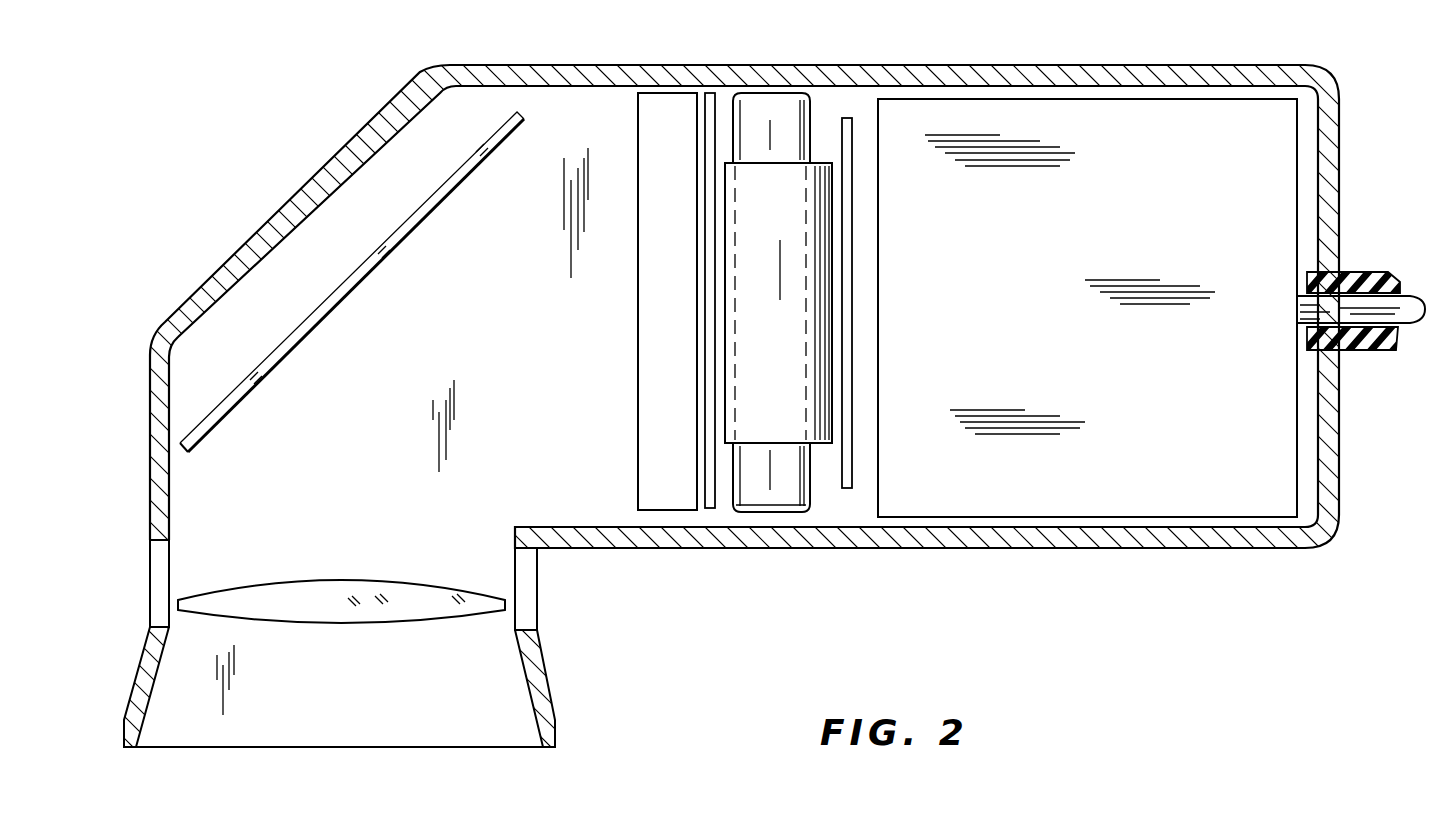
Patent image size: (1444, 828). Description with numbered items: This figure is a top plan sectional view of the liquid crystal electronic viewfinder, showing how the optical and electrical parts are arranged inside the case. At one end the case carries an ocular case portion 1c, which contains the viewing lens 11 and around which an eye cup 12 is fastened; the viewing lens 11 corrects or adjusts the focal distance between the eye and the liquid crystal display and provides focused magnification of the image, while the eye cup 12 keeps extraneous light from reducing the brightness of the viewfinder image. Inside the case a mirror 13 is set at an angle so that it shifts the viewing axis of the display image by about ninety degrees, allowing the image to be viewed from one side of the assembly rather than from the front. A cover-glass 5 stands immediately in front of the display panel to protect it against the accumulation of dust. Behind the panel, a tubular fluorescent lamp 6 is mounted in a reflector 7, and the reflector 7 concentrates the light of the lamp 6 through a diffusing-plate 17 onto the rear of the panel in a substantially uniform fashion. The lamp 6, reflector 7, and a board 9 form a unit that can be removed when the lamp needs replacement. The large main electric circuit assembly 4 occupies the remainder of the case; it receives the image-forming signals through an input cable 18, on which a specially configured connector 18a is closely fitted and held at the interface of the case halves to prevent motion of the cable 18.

The ocular case portion 1c is at (524, 577).
The main electric circuit assembly 4 is at (1143, 488).
The cover-glass 5 is at (663, 110).
The tubular fluorescent lamp 6 is at (800, 515).
The reflector 7 is at (790, 427).
The board 9 is at (853, 253).
The viewing lens 11 is at (340, 615).
The eye cup 12 is at (535, 656).
The mirror 13 is at (318, 304).
The diffusing-plate 17 is at (718, 495).
The input cable 18 is at (1410, 295).
The connector 18a is at (1378, 262).